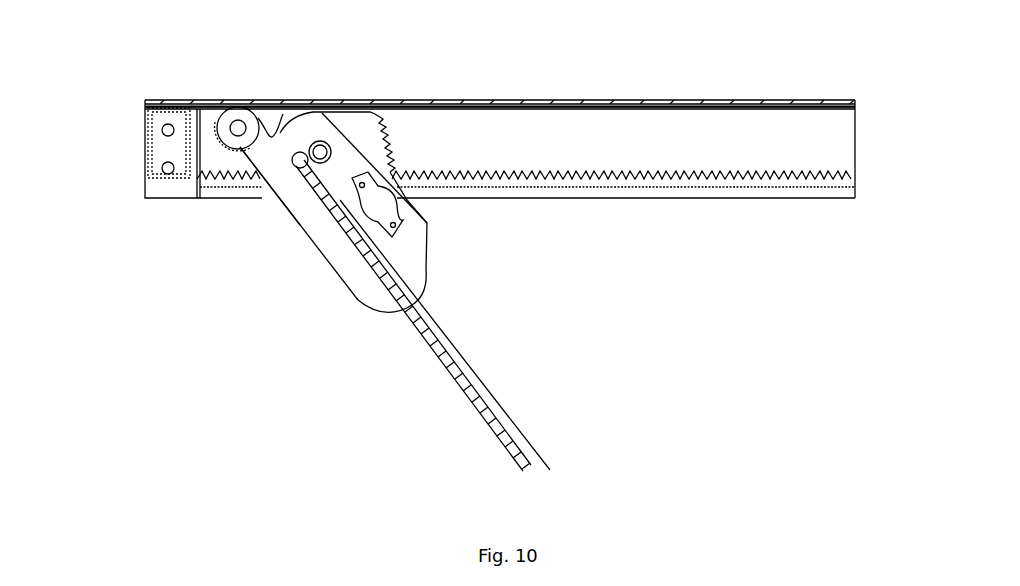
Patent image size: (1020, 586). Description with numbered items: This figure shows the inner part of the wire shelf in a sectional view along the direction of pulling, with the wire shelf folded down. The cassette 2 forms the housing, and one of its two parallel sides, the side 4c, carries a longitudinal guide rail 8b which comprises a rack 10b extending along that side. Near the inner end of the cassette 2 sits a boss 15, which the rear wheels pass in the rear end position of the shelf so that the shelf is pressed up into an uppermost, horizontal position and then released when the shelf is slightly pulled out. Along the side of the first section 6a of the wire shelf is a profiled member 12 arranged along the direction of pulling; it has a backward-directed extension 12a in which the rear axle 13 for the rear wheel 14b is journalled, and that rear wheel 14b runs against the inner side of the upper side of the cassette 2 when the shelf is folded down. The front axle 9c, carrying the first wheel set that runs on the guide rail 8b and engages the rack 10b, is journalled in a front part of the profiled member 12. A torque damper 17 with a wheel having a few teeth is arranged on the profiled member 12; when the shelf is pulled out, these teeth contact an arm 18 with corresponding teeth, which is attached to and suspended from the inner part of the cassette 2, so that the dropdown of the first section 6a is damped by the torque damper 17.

The cassette 2 is at (598, 104).
The boss 15 is at (146, 161).
The guide rail 8b is at (777, 198).
The rack 10b is at (736, 113).
The side of the cassette 4c is at (658, 158).
The rear axle 13 is at (240, 120).
The rear wheel 14b is at (213, 123).
The profiled member 12 is at (425, 268).
The extension 12a is at (262, 148).
The arm 18 is at (405, 113).
The front axle 9c is at (320, 141).
The torque damper 17 is at (410, 213).
The first section 6a is at (418, 340).